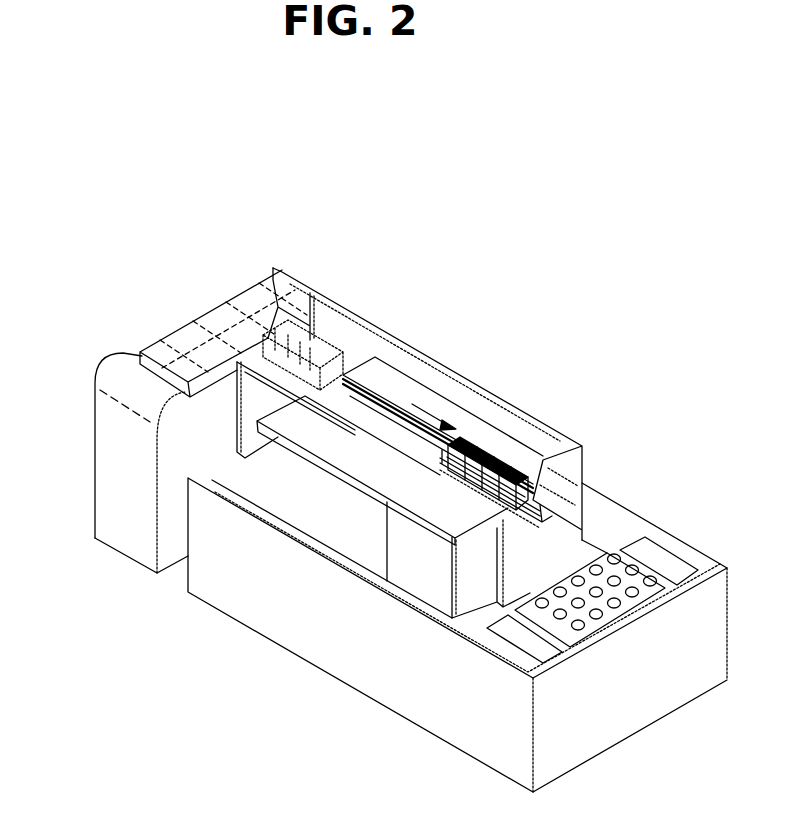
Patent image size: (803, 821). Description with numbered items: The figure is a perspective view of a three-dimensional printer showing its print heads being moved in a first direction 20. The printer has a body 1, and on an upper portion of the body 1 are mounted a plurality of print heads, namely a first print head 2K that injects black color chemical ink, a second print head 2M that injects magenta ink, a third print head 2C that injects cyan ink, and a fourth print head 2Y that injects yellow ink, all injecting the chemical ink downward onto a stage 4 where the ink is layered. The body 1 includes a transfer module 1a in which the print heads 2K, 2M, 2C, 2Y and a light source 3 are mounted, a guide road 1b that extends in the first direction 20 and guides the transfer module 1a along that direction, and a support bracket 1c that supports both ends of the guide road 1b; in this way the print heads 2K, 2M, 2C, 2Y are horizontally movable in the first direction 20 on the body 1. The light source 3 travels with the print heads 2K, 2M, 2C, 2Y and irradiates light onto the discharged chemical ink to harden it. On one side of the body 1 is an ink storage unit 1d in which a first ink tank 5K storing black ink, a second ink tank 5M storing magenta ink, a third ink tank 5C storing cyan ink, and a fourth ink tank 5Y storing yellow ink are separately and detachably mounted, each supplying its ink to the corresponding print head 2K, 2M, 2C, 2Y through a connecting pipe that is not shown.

The body 1 is at (296, 691).
The transfer module 1a is at (522, 491).
The guide road 1b is at (398, 396).
The support bracket 1c is at (573, 467).
The ink storage unit 1d is at (120, 465).
The first print head 2K is at (470, 433).
The second print head 2M is at (493, 443).
The third print head 2C is at (507, 455).
The fourth print head 2Y is at (517, 463).
The light source 3 is at (537, 457).
The stage 4 is at (357, 457).
The first ink tank 5K is at (178, 347).
The second ink tank 5M is at (218, 322).
The third ink tank 5C is at (247, 307).
The fourth ink tank 5Y is at (278, 288).
The first direction 20 is at (412, 404).